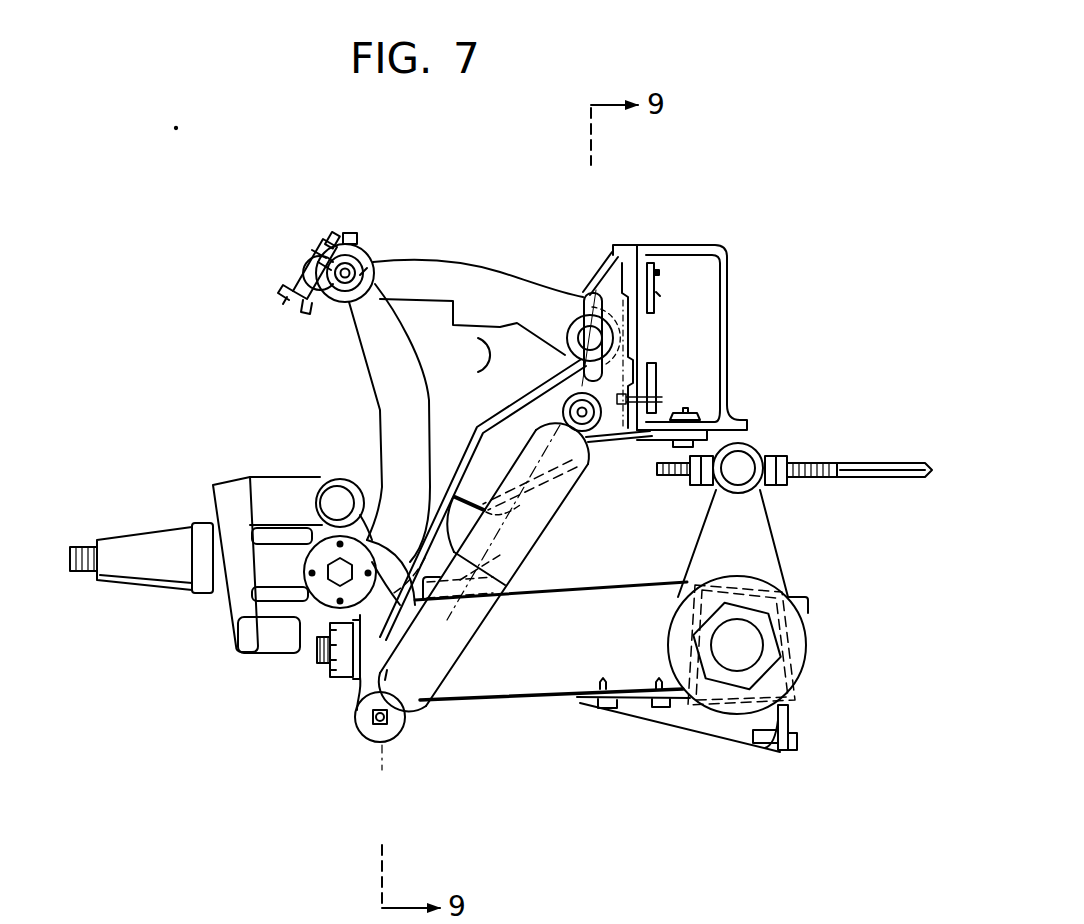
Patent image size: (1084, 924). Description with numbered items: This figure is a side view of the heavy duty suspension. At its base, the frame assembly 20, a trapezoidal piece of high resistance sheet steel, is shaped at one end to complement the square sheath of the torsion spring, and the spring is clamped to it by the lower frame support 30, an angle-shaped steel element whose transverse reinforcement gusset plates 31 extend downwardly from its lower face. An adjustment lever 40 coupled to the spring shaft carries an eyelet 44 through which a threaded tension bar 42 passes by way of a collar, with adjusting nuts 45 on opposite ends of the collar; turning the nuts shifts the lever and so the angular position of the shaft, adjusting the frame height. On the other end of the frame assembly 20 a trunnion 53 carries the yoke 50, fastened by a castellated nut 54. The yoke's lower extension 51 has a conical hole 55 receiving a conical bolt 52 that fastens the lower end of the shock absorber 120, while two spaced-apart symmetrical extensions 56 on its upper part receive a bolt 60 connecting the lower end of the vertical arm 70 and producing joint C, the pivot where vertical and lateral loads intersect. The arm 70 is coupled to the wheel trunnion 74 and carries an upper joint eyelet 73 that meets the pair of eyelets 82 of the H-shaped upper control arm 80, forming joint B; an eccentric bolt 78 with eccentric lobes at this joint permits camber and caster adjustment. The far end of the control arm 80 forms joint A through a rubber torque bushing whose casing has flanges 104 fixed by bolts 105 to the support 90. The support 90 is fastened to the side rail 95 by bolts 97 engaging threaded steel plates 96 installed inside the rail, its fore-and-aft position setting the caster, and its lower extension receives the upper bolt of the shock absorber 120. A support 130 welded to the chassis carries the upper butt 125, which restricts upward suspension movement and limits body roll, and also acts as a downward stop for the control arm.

The frame assembly 20 is at (549, 700).
The lower frame support 30 is at (792, 722).
The reinforcement gusset plates 31 is at (707, 718).
The adjustment lever 40 is at (752, 540).
The tension bar 42 is at (868, 462).
The eyelet 44 is at (762, 450).
The adjusting nuts 45 is at (700, 487).
The yoke 50 is at (322, 624).
The extension 51 is at (387, 735).
The conical bolt 52 is at (392, 730).
The trunnion 53 is at (321, 664).
The castellated nut 54 is at (345, 680).
The conical hole 55 is at (397, 717).
The symmetrical extensions 56 is at (395, 612).
The bolt 60 is at (251, 541).
The vertical arm 70 is at (392, 468).
The upper joint eyelet 73 is at (327, 303).
The trunnion of the wheel 74 is at (100, 540).
The eccentric bolt 78 is at (335, 257).
The upper control arm 80 is at (476, 292).
The eyelets 82 is at (318, 262).
The support 90 is at (622, 250).
The rail 95 is at (740, 332).
The steel plates 96 is at (658, 293).
The bolts 97 is at (605, 256).
The flanges 104 is at (583, 298).
The bolts 105 is at (565, 380).
The shock absorber 120 is at (496, 564).
The upper butt 125 is at (492, 522).
The support 130 is at (490, 455).
The joint A is at (580, 325).
The joint B is at (367, 267).
The joint C is at (352, 563).